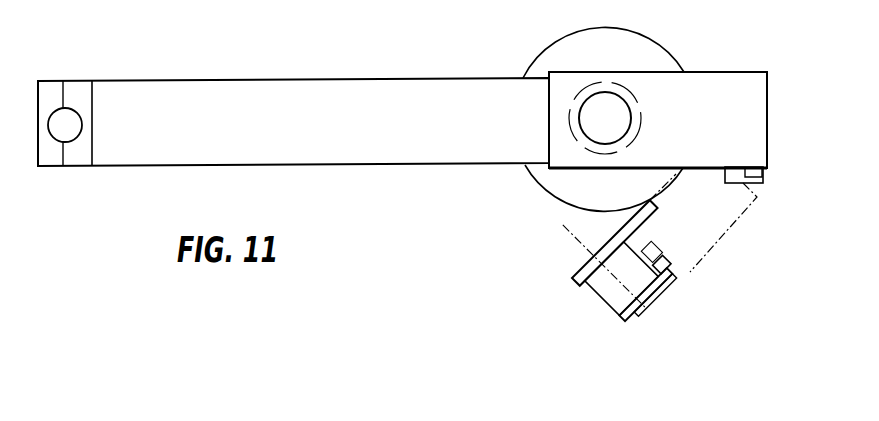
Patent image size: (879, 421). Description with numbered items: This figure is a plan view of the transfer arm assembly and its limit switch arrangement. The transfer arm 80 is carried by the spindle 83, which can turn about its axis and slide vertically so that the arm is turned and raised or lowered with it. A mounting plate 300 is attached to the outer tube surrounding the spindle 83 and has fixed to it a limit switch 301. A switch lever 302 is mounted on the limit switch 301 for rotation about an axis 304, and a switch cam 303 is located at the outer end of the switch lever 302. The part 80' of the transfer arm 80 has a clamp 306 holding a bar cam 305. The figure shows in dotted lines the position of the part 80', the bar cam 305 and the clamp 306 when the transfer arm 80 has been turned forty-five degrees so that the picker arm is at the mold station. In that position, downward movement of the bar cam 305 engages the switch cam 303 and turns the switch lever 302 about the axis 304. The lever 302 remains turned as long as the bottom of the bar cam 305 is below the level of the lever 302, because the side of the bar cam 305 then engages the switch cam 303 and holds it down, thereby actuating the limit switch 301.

The transfer arm 80 is at (293, 98).
The part of the transfer arm 80' is at (685, 157).
The spindle 83 is at (617, 110).
The mounting plate 300 is at (621, 249).
The limit switch 301 is at (622, 279).
The switch lever 302 is at (655, 295).
The switch cam 303 is at (656, 257).
The axis 304 is at (645, 294).
The bar cam 305 is at (763, 172).
The clamp 306 is at (738, 167).